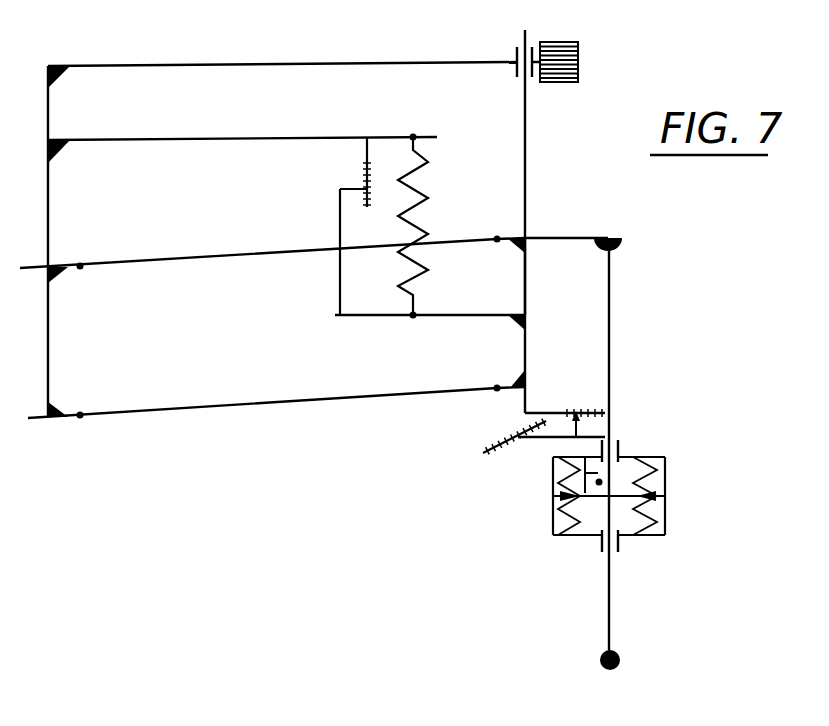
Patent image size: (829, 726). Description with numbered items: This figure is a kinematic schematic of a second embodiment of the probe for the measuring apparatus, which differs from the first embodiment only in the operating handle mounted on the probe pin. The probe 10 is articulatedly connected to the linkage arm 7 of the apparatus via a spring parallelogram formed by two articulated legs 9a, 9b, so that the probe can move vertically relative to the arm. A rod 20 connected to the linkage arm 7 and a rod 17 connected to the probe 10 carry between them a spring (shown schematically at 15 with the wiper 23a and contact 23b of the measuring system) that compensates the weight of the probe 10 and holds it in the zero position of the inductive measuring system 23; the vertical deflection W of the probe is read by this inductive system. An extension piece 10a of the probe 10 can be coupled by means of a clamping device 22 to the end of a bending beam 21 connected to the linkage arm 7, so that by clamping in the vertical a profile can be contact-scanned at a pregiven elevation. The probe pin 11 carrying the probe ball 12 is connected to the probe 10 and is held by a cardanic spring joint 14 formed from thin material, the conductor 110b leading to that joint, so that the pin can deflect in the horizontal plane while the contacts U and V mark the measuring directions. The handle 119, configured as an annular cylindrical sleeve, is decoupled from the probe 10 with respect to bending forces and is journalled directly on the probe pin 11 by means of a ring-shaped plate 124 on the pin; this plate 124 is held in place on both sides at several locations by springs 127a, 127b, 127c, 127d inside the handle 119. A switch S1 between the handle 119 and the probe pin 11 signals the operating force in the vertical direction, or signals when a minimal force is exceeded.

The linkage arm 7 is at (40, 422).
The articulated leg 9a is at (218, 257).
The articulated leg 9b is at (218, 406).
The probe 10 is at (524, 277).
The extension piece 10a is at (527, 133).
The probe pin 11 is at (612, 345).
The probe ball 12 is at (622, 655).
The cardanic spring joint 14 is at (624, 241).
The potentiometer resistor 15 is at (430, 200).
The rod 17 is at (370, 318).
The rod 20 is at (272, 137).
The bending beam 21 is at (393, 61).
The clamping device 22 is at (578, 50).
The measuring system 23 is at (367, 190).
The wiper contact 23a is at (484, 455).
The wiper contact 23b is at (575, 408).
The conductor 110b is at (568, 237).
The handle 119 is at (667, 495).
The ring-shaped plate 124 is at (625, 492).
The spring 127a is at (552, 466).
The spring 127b is at (552, 520).
The spring 127c is at (664, 470).
The spring 127d is at (664, 518).
The switch S1 is at (588, 498).
The contact U is at (490, 428).
The contact V is at (624, 416).
The vertical deflection W is at (335, 171).